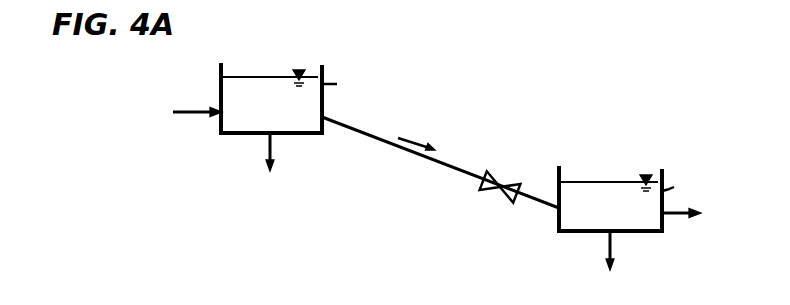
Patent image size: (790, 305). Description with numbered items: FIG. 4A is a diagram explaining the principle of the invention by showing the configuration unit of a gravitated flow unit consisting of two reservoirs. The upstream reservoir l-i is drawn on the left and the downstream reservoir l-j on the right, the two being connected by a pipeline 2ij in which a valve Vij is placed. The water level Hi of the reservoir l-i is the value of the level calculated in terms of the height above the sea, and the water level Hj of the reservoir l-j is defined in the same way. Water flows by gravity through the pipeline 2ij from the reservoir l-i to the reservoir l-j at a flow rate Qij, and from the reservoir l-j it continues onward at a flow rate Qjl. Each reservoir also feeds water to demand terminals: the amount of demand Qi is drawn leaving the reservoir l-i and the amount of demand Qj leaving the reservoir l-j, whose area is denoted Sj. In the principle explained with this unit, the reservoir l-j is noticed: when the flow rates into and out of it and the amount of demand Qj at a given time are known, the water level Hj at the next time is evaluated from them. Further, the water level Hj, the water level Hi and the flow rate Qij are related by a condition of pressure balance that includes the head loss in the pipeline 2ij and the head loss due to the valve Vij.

The water level of reservoir 1-i Hi is at (271, 90).
The water level of reservoir 1-j Hj is at (608, 166).
The flow rate from reservoir 1-i to reservoir 1-j Qij is at (304, 116).
The amount of demand of reservoir 1-i Qi is at (281, 158).
The amount of demand of reservoir 1-j Qj is at (621, 254).
The flow rate from reservoir 1-j onward Qjl is at (696, 205).
The pipeline 2ij is at (407, 151).
The valve Vij is at (500, 175).
The area of reservoir 1-j Sj is at (607, 212).
The reservoir l-i is at (338, 83).
The reservoir l-j is at (677, 187).